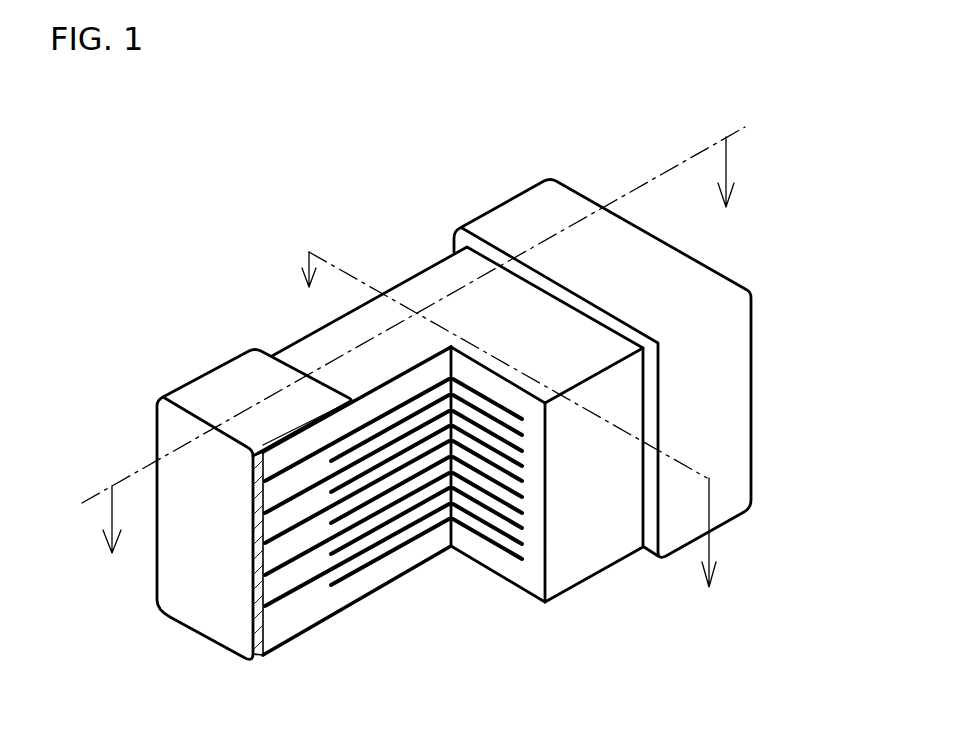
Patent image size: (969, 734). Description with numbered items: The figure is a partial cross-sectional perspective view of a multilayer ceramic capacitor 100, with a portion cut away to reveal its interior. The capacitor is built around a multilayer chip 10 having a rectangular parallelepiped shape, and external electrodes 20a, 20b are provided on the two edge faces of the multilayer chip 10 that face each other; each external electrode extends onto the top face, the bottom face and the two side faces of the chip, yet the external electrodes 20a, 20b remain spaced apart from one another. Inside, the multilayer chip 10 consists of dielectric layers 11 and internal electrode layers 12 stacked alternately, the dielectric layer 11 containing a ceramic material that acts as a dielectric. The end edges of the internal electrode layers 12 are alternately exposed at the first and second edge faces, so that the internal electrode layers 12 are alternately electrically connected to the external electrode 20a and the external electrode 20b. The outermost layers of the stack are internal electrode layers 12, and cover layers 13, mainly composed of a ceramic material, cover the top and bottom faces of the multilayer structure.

The multilayer ceramic capacitor 100 is at (848, 112).
The multilayer chip 10 is at (297, 342).
The dielectric layer 11 is at (383, 533).
The internal electrode layer 12 is at (436, 530).
The cover layer 13 is at (422, 288).
The external electrode 20a is at (185, 383).
The external electrode 20b is at (507, 218).